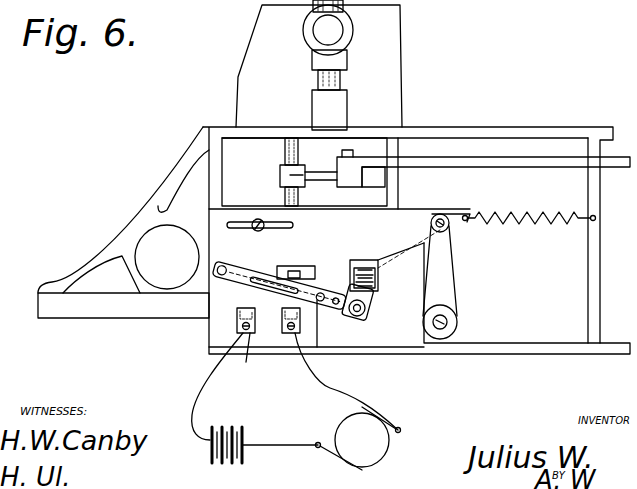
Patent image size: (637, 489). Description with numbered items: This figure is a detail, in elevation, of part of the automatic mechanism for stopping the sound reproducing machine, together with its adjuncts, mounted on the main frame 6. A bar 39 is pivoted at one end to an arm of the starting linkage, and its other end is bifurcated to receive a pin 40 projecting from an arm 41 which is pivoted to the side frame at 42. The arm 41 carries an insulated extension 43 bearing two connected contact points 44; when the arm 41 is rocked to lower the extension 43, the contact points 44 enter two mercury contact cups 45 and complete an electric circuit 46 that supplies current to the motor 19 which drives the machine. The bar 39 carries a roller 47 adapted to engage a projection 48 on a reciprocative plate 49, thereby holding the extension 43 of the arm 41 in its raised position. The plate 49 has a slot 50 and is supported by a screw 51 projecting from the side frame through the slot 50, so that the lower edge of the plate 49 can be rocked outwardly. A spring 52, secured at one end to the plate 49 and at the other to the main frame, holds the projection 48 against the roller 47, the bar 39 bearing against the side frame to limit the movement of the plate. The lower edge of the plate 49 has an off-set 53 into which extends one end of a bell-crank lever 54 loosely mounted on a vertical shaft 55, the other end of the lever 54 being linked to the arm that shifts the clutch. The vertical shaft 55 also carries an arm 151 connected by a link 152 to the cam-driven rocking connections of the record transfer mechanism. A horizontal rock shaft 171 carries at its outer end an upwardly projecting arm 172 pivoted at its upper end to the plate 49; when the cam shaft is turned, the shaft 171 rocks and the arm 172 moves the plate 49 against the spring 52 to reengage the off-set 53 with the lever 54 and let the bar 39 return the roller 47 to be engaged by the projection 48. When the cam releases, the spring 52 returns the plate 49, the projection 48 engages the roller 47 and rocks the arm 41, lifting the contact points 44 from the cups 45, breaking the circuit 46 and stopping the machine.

The main frame 6 is at (100, 308).
The motor 19 is at (366, 440).
The bar 39 is at (372, 288).
The pin 40 is at (374, 279).
The arm 41 is at (367, 302).
The pivot 42 is at (357, 316).
The insulated extension 43 is at (305, 292).
The contact points 44 is at (249, 290).
The mercury contact cups 45 is at (287, 333).
The electric circuit 46 is at (281, 443).
The roller 47 is at (370, 270).
The projection 48 is at (350, 260).
The reciprocative plate 49 is at (409, 243).
The slot 50 is at (282, 222).
The screw 51 is at (258, 219).
The spring 52 is at (510, 213).
The off-set 53 is at (310, 266).
The bell-crank lever 54 is at (290, 266).
The vertical shaft 55 is at (297, 140).
The arm 151 is at (358, 180).
The link 152 is at (492, 163).
The horizontal rock shaft 171 is at (448, 322).
The arm 172 is at (444, 268).